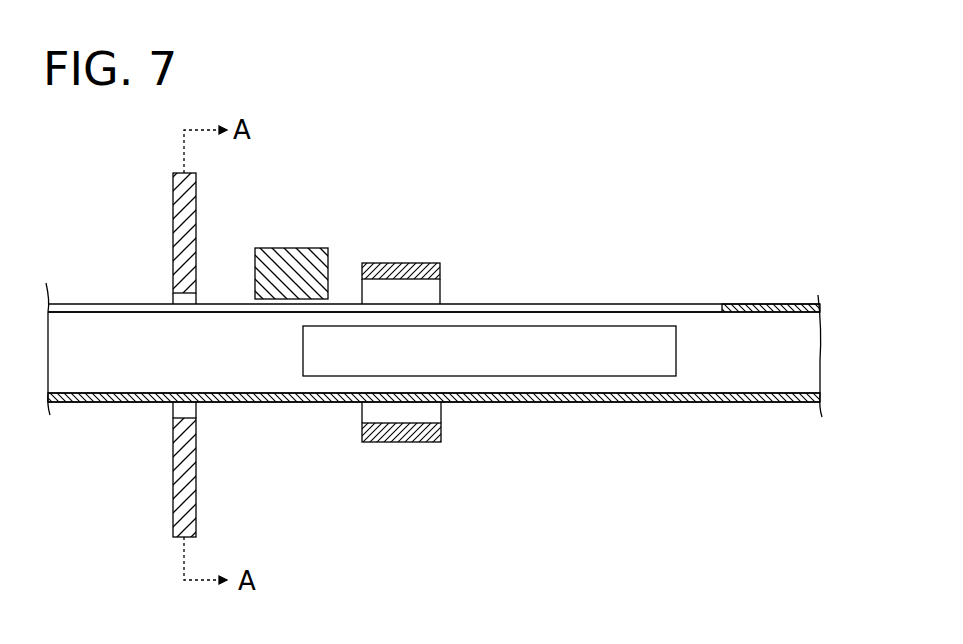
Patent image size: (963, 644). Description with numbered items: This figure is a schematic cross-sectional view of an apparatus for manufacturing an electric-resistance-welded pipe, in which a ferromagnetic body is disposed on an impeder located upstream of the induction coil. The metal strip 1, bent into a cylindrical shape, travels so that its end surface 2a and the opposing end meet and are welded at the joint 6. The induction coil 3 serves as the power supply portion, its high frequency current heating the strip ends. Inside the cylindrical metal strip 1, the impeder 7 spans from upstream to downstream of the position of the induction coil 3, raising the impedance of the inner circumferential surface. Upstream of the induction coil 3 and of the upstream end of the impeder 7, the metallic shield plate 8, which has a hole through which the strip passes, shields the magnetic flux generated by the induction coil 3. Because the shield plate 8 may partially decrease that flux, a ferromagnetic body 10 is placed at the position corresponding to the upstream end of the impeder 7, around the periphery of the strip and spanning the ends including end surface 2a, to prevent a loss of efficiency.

The metal strip 1 is at (92, 303).
The end surface of the metal strip 2a is at (136, 312).
The induction coil 3 is at (440, 270).
The joint 6 is at (728, 304).
The impeder 7 is at (582, 363).
The metallic shield plate 8 is at (196, 230).
The ferromagnetic body 10 is at (298, 248).